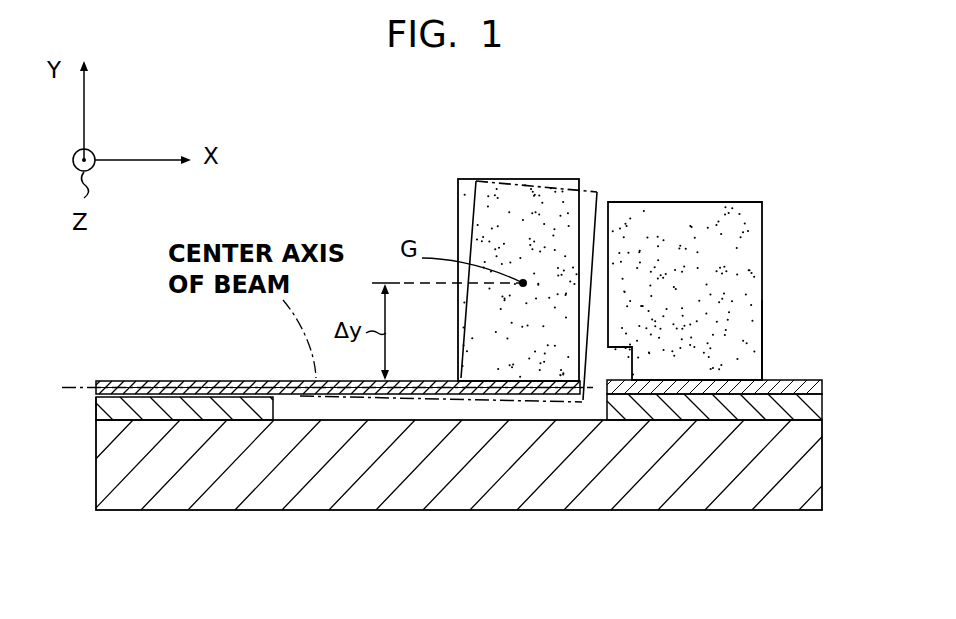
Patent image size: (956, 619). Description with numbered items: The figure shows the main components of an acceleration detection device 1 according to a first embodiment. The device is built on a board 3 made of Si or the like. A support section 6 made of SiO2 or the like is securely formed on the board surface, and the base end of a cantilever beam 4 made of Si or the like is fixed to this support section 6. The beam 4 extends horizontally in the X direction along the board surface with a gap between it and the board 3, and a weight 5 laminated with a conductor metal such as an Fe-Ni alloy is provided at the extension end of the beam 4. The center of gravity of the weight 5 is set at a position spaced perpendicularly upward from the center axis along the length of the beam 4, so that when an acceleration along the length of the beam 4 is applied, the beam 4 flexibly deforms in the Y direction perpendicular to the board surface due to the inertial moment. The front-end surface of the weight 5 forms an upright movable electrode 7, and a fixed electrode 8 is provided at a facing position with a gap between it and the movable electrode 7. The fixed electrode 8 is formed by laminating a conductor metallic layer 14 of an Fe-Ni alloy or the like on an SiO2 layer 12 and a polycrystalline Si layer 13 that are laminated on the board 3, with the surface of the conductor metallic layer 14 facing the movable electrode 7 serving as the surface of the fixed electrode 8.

The acceleration detection device 1 is at (356, 148).
The board 3 is at (496, 510).
The beam 4 is at (348, 376).
The weight 5 is at (499, 190).
The support section 6 is at (96, 420).
The movable electrode 7 is at (597, 192).
The fixed electrode 8 is at (608, 226).
The SiO2 layer 12 is at (822, 408).
The polycrystalline Si layer 13 is at (803, 380).
The conductor metallic layer 14 is at (752, 318).